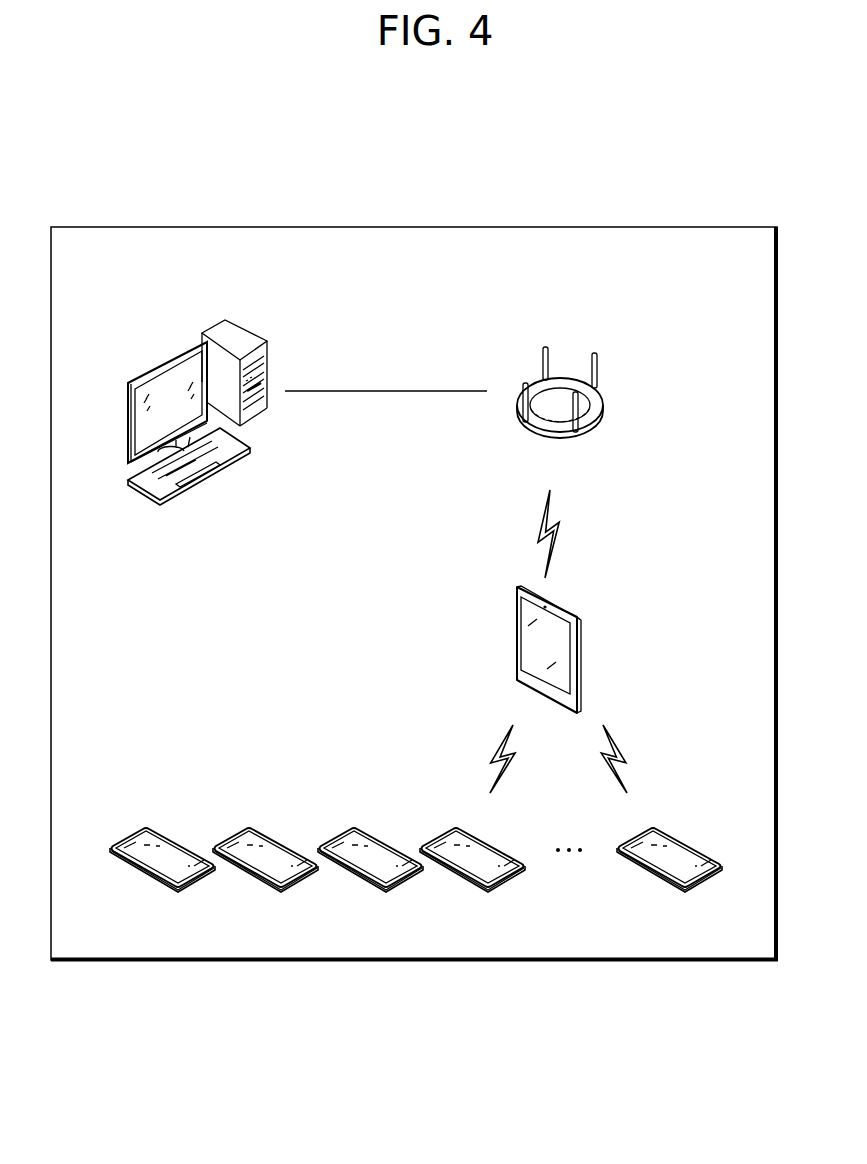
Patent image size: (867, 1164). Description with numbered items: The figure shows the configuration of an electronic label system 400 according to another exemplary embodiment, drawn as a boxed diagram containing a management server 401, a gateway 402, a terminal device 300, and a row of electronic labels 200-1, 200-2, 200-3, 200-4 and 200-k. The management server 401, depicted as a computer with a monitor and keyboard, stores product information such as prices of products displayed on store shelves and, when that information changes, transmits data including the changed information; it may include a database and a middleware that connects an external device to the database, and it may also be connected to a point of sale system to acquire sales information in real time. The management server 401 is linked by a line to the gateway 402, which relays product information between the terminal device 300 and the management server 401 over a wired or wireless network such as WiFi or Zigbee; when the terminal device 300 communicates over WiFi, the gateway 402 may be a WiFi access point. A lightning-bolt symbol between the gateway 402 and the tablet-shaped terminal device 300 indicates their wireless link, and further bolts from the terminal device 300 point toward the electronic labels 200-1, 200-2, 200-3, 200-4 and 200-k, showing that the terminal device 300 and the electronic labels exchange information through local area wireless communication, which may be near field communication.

The electronic label system 400 is at (415, 961).
The management server 401 is at (232, 466).
The gateway 402 is at (600, 423).
The terminal device 300 is at (580, 655).
The electronic label 200-1 is at (157, 886).
The electronic label 200-2 is at (260, 886).
The electronic label 200-3 is at (365, 886).
The electronic label 200-4 is at (467, 886).
The electronic label 200-k is at (664, 886).